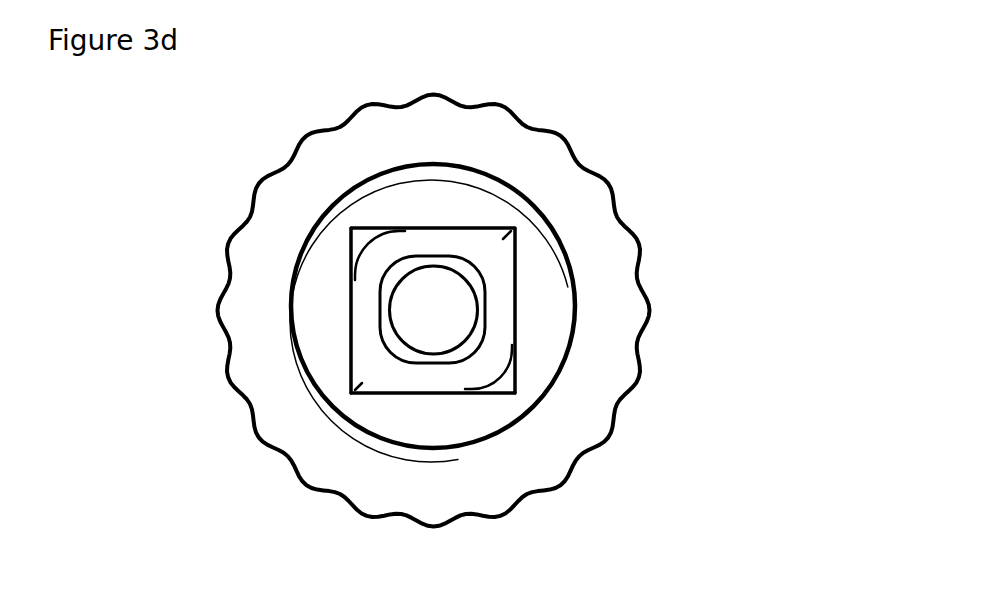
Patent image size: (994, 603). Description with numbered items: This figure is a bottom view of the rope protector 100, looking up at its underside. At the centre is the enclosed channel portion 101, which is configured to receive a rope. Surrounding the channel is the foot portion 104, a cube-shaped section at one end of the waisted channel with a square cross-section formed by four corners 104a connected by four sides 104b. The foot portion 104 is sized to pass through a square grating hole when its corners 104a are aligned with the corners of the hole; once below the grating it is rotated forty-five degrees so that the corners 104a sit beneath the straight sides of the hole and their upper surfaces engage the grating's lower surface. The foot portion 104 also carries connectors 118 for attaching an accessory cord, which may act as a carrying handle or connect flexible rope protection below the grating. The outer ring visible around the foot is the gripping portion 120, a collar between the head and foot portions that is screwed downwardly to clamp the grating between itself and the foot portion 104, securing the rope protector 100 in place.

The rope protector 100 is at (186, 336).
The enclosed channel portion 101 is at (431, 328).
The foot portion 104 is at (492, 258).
The corners 104a is at (351, 228).
The sides 104b is at (439, 224).
The connectors 118 is at (352, 242).
The gripping portion 120 is at (607, 373).